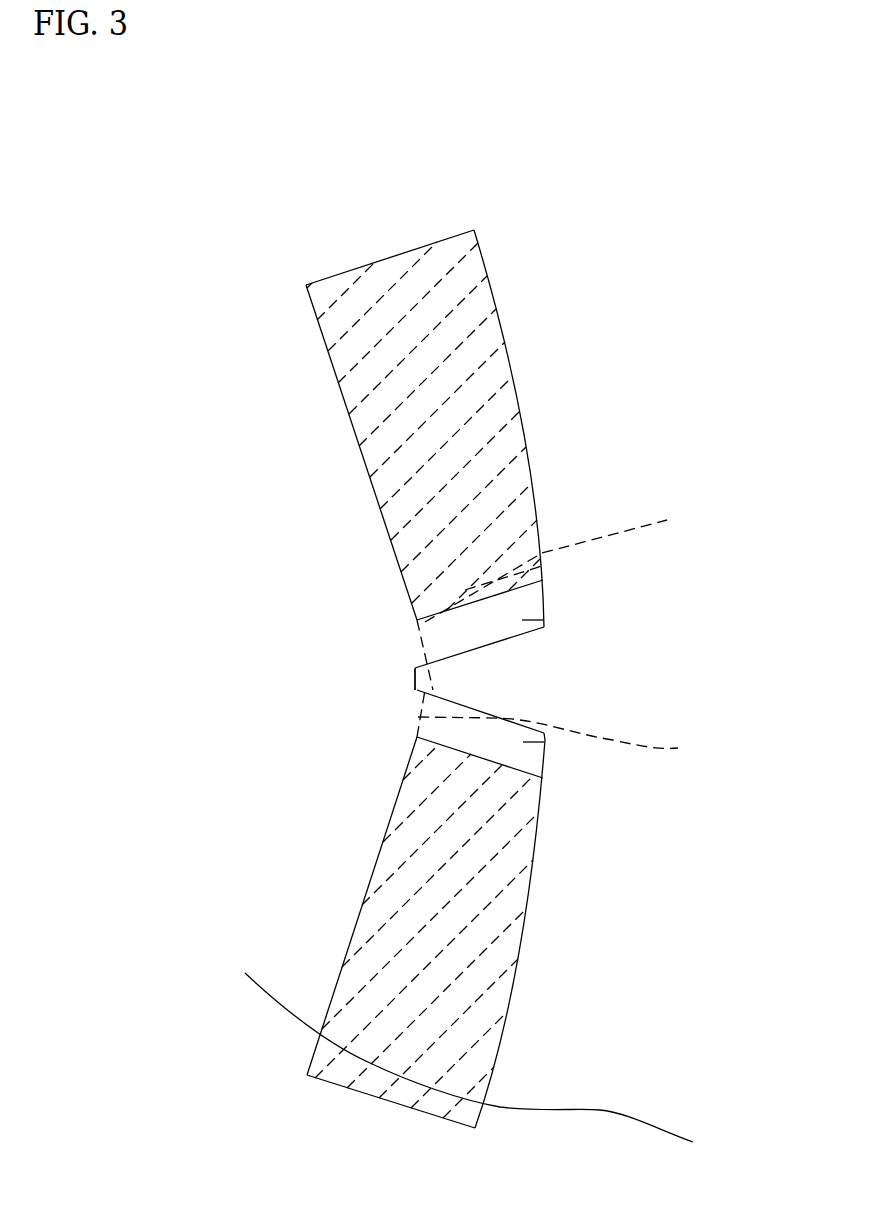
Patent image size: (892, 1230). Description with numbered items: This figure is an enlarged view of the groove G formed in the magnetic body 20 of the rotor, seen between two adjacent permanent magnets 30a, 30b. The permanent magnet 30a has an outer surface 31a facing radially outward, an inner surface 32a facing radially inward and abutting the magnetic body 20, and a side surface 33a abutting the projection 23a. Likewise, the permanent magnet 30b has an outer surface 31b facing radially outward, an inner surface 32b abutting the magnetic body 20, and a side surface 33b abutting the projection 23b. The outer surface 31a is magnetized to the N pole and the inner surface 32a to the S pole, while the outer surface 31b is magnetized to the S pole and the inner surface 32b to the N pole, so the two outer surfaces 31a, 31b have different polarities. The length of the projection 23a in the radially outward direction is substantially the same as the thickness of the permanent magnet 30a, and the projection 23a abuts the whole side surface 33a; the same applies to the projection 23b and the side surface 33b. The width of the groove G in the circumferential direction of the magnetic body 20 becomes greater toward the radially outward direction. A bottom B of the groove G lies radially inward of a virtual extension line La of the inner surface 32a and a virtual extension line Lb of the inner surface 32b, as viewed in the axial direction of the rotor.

The magnetic body 20 is at (483, 1069).
The projection 23a is at (543, 612).
The projection 23b is at (544, 745).
The permanent magnet 30a is at (482, 393).
The permanent magnet 30b is at (482, 878).
The outer surface 31a is at (532, 467).
The outer surface 31b is at (518, 973).
The inner surface 32a is at (343, 403).
The inner surface 32b is at (355, 920).
The side surface 33a is at (510, 590).
The side surface 33b is at (490, 763).
The groove G is at (520, 660).
The bottom B is at (417, 685).
The virtual extension line La is at (559, 595).
The virtual extension line Lb is at (566, 729).